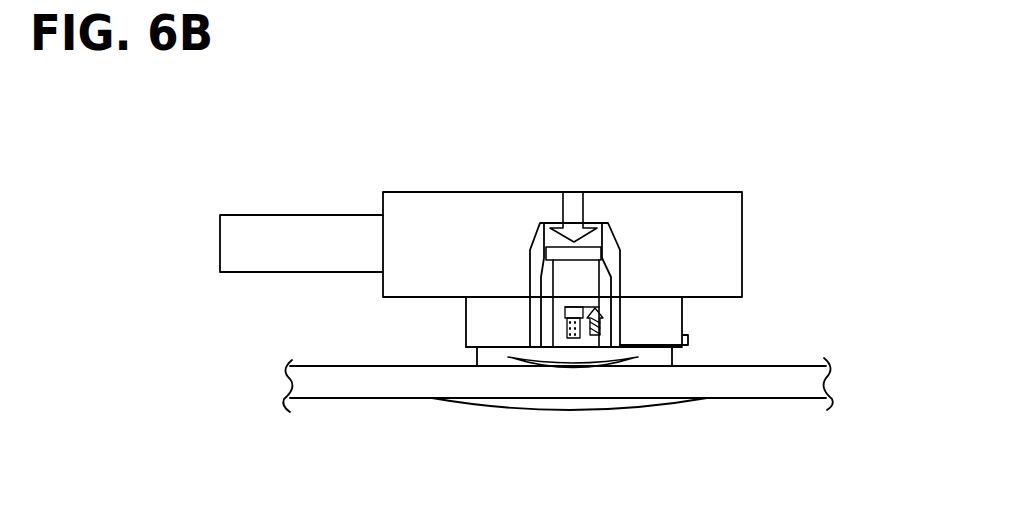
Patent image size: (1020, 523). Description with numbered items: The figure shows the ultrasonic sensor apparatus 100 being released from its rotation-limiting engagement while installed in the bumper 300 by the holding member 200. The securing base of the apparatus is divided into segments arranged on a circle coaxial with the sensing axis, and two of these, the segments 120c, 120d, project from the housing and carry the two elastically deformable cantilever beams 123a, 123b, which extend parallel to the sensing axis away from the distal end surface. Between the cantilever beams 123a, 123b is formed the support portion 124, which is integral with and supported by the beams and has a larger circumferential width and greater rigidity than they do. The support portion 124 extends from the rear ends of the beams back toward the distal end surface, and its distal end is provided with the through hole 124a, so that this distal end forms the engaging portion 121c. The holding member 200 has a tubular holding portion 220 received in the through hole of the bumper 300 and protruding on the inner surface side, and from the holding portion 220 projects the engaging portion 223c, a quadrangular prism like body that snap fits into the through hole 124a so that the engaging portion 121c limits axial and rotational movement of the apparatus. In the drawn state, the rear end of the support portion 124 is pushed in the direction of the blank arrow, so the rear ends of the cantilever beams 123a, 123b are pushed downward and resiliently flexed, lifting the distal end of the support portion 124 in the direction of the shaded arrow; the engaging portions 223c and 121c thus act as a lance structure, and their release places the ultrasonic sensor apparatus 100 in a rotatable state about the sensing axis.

The ultrasonic sensor apparatus 100 is at (758, 189).
The support portion 124 is at (592, 214).
The through hole 124a is at (567, 313).
The cantilever beam 123a is at (535, 285).
The cantilever beam 123b is at (615, 284).
The segment 120c is at (478, 327).
The segment 120d is at (663, 322).
The holding portion 220 is at (474, 358).
The bumper 300 is at (802, 363).
The holding member 200 is at (695, 413).
The engaging portion 223c is at (570, 338).
The engaging portion 121c is at (574, 342).